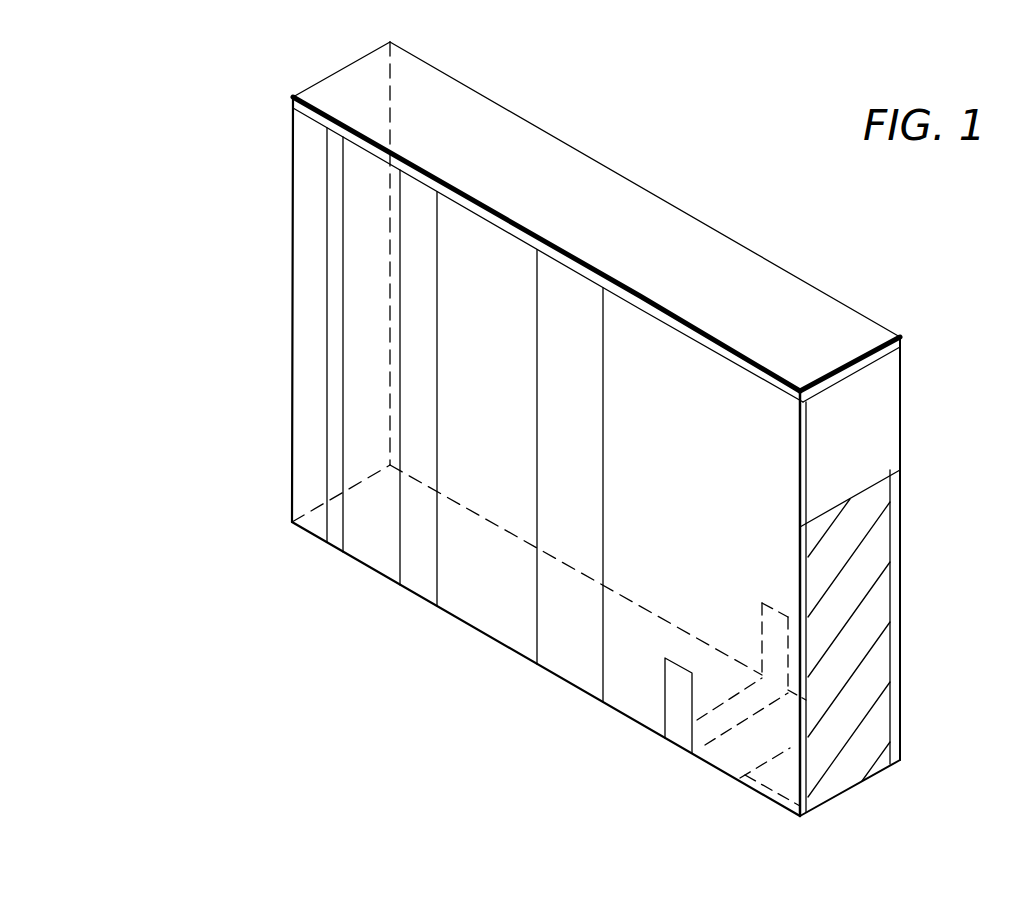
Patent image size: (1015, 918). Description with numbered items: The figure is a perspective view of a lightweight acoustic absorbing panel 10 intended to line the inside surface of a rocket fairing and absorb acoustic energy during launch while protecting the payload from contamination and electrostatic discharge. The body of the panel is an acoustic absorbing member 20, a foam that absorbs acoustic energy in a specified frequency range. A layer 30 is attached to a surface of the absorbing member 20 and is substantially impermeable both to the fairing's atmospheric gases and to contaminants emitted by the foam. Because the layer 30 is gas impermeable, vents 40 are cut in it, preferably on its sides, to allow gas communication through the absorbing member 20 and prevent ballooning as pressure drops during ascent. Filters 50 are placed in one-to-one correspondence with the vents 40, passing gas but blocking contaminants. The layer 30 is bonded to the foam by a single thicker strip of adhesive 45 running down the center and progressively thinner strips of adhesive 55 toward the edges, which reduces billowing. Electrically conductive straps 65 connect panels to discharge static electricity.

The acoustic absorbing panel 10 is at (205, 614).
The acoustic absorbing member 20 is at (633, 203).
The layer 30 is at (293, 97).
The vents 40 is at (893, 513).
The strip of adhesive 45 is at (570, 673).
The filters 50 is at (880, 731).
The strips of adhesive 55 is at (413, 582).
The electrically conductive straps 65 is at (683, 720).